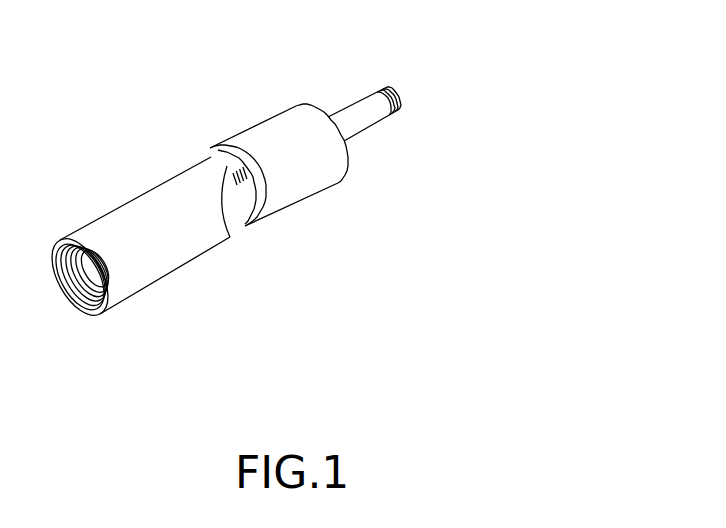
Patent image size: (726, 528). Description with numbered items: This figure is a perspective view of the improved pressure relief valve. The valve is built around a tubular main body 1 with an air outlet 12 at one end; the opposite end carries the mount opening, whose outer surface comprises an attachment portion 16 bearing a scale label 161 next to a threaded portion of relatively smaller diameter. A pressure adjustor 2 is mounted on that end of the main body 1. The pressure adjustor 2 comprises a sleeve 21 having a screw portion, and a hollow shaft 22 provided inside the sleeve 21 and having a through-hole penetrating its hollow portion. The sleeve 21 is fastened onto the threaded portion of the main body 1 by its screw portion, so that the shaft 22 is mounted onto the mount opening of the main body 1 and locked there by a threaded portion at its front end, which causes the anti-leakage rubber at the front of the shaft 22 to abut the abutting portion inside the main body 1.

The tubular main body 1 is at (146, 190).
The air outlet 12 is at (73, 300).
The attachment portion 16 is at (230, 165).
The scale label 161 is at (243, 240).
The pressure adjustor 2 is at (318, 154).
The sleeve 21 is at (300, 201).
The hollow shaft 22 is at (370, 128).